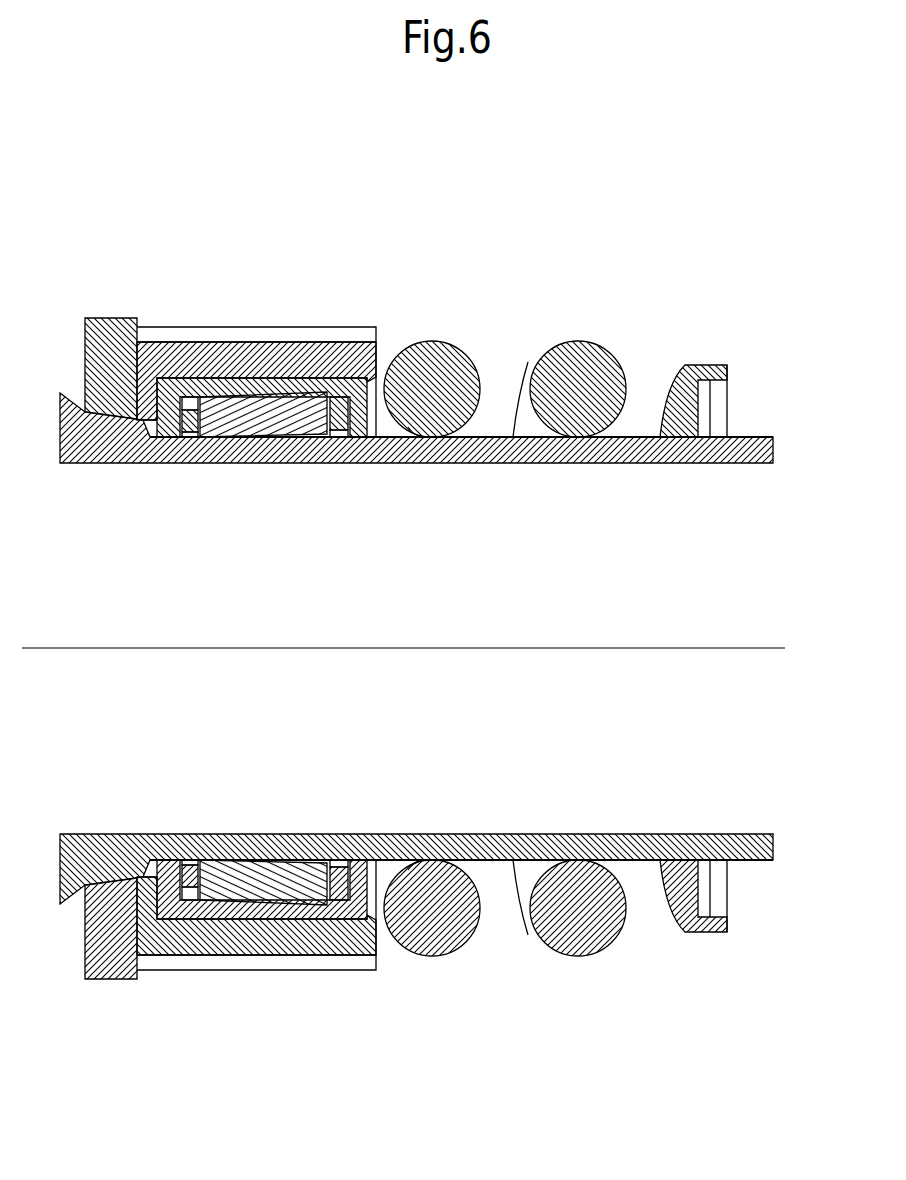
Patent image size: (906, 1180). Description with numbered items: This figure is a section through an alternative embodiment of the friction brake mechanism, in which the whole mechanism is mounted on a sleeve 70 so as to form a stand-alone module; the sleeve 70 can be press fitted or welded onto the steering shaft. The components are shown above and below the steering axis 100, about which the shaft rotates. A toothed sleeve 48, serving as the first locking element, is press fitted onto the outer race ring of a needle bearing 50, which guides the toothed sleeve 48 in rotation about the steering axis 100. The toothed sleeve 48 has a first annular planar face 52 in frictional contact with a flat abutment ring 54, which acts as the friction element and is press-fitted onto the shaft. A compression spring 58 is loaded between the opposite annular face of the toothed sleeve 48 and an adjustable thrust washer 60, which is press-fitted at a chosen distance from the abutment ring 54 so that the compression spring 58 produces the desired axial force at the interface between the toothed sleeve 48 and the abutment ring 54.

The toothed sleeve 48 is at (318, 343).
The needle bearing 50 is at (247, 393).
The first annular planar face 52 is at (137, 326).
The abutment ring 54 is at (99, 332).
The compression spring 58 is at (585, 343).
The adjustable thrust washer 60 is at (702, 365).
The sleeve 70 is at (758, 437).
The steering axis 100 is at (130, 648).